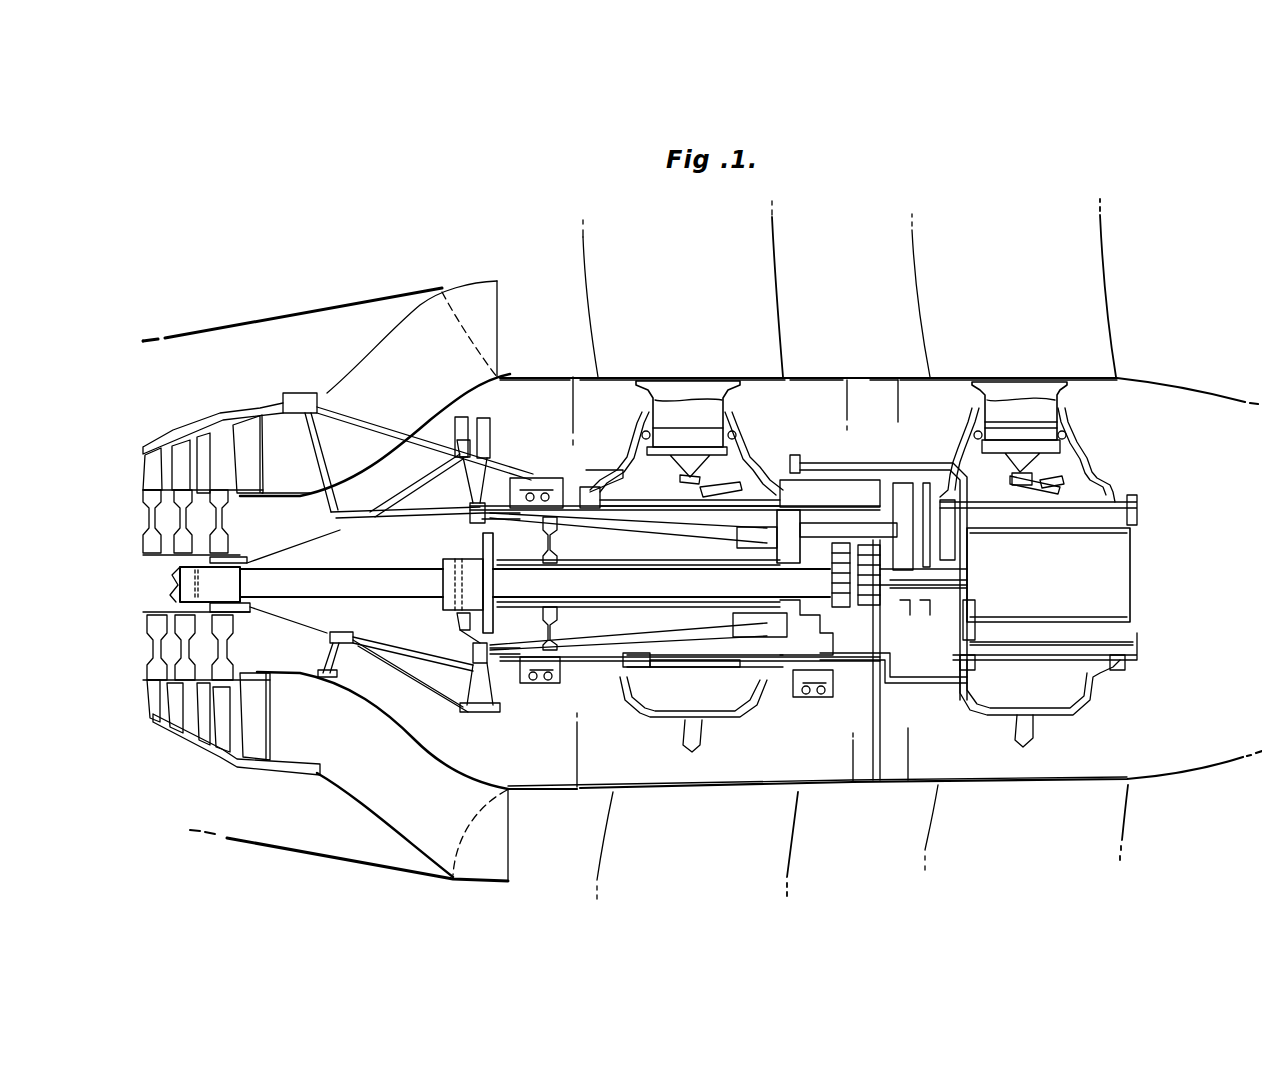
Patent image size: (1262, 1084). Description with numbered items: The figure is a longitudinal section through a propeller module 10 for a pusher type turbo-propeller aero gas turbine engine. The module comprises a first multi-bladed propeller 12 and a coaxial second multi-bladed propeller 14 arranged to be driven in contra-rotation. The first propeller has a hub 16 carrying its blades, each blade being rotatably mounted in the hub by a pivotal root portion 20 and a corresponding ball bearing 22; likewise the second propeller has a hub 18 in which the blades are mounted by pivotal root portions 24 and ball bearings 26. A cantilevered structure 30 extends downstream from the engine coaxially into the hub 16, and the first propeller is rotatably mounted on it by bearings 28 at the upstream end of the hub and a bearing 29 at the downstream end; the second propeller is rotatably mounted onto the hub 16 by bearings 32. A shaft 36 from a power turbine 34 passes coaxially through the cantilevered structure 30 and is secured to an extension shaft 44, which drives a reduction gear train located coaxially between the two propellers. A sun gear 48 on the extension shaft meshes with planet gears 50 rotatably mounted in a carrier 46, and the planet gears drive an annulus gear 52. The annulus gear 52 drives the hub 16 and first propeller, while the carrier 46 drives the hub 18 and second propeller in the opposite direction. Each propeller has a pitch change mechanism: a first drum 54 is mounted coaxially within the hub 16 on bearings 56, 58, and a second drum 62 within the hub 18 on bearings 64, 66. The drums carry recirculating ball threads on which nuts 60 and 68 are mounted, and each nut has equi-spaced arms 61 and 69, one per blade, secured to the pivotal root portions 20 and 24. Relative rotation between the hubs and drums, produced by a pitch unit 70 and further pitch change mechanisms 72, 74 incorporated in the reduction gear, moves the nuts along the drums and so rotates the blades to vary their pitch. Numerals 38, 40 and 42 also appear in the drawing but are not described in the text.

The propeller module 10 is at (536, 266).
The first multi-bladed propeller 12 is at (690, 297).
The second multi-bladed propeller 14 is at (1030, 294).
The hub 16 is at (592, 485).
The hub 18 is at (1100, 478).
The pivotal root portions 20 is at (680, 398).
The ball bearing 22 is at (733, 443).
The pivotal root portions 24 is at (1047, 412).
The ball bearing 26 is at (975, 432).
The bearings 28 is at (540, 476).
The bearing 29 is at (760, 537).
The cantilevered structure 30 is at (440, 518).
The bearings 32 is at (796, 455).
The power turbine 34 is at (182, 445).
The shaft 36 is at (287, 600).
The inlet duct 38 is at (425, 375).
The nacelle 40 is at (497, 342).
The shaft bearing 42 is at (457, 617).
The extension shaft 44 is at (600, 566).
The carrier 46 is at (613, 610).
The sun gear 48 is at (847, 597).
The planet gears 50 is at (880, 577).
The annulus gear 52 is at (847, 677).
The first drum 54 is at (633, 663).
The bearing 56 is at (627, 665).
The bearing 58 is at (773, 670).
The nut 60 is at (682, 495).
The arms 61 is at (735, 485).
The second drum 62 is at (1013, 657).
The bearing 64 is at (970, 660).
The bearing 66 is at (1117, 662).
The nut 68 is at (1020, 493).
The arms 69 is at (1037, 493).
The pitch unit 70 is at (1080, 597).
The pitch change mechanism 72 is at (948, 553).
The pitch change mechanism 74 is at (978, 621).